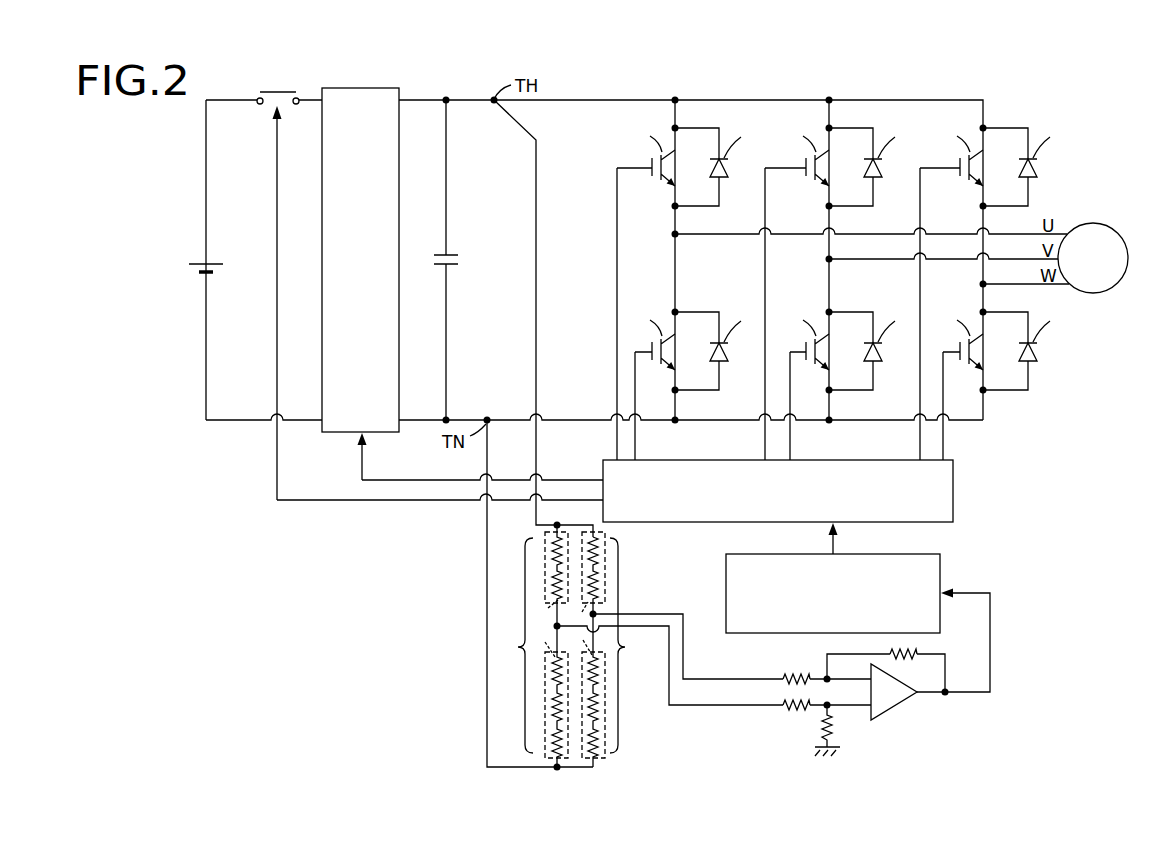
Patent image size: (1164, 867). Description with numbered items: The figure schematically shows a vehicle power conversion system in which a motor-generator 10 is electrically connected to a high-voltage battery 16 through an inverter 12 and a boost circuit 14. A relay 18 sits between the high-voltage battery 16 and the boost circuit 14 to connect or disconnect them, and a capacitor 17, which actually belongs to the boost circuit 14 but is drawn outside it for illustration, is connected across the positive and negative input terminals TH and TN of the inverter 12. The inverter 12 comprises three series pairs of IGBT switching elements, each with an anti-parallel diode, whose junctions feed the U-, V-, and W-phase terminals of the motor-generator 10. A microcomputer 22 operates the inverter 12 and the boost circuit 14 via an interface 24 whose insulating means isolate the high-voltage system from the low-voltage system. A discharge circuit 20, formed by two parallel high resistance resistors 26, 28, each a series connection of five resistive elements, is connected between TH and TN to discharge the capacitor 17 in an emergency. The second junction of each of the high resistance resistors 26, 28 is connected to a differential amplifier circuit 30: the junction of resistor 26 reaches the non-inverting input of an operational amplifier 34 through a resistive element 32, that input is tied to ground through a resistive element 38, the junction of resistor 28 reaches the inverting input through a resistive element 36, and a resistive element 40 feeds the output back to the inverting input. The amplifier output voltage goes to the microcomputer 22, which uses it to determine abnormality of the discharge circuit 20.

The motor-generator 10 is at (1093, 224).
The inverter 12 is at (1020, 106).
The boost circuit 14 is at (386, 89).
The high-voltage battery 16 is at (213, 263).
The capacitor 17 is at (452, 255).
The relay 18 is at (272, 91).
The discharge circuit 20 is at (545, 642).
The microcomputer 22 is at (942, 563).
The interface 24 is at (955, 483).
The high resistance resistor 26 is at (531, 646).
The high resistance resistor 28 is at (617, 649).
The differential amplifier circuit 30 is at (773, 677).
The resistive element 32 is at (790, 712).
The operational amplifier 34 is at (898, 708).
The resistive element 36 is at (792, 672).
The resistive element 38 is at (832, 728).
The resistive element 40 is at (912, 658).